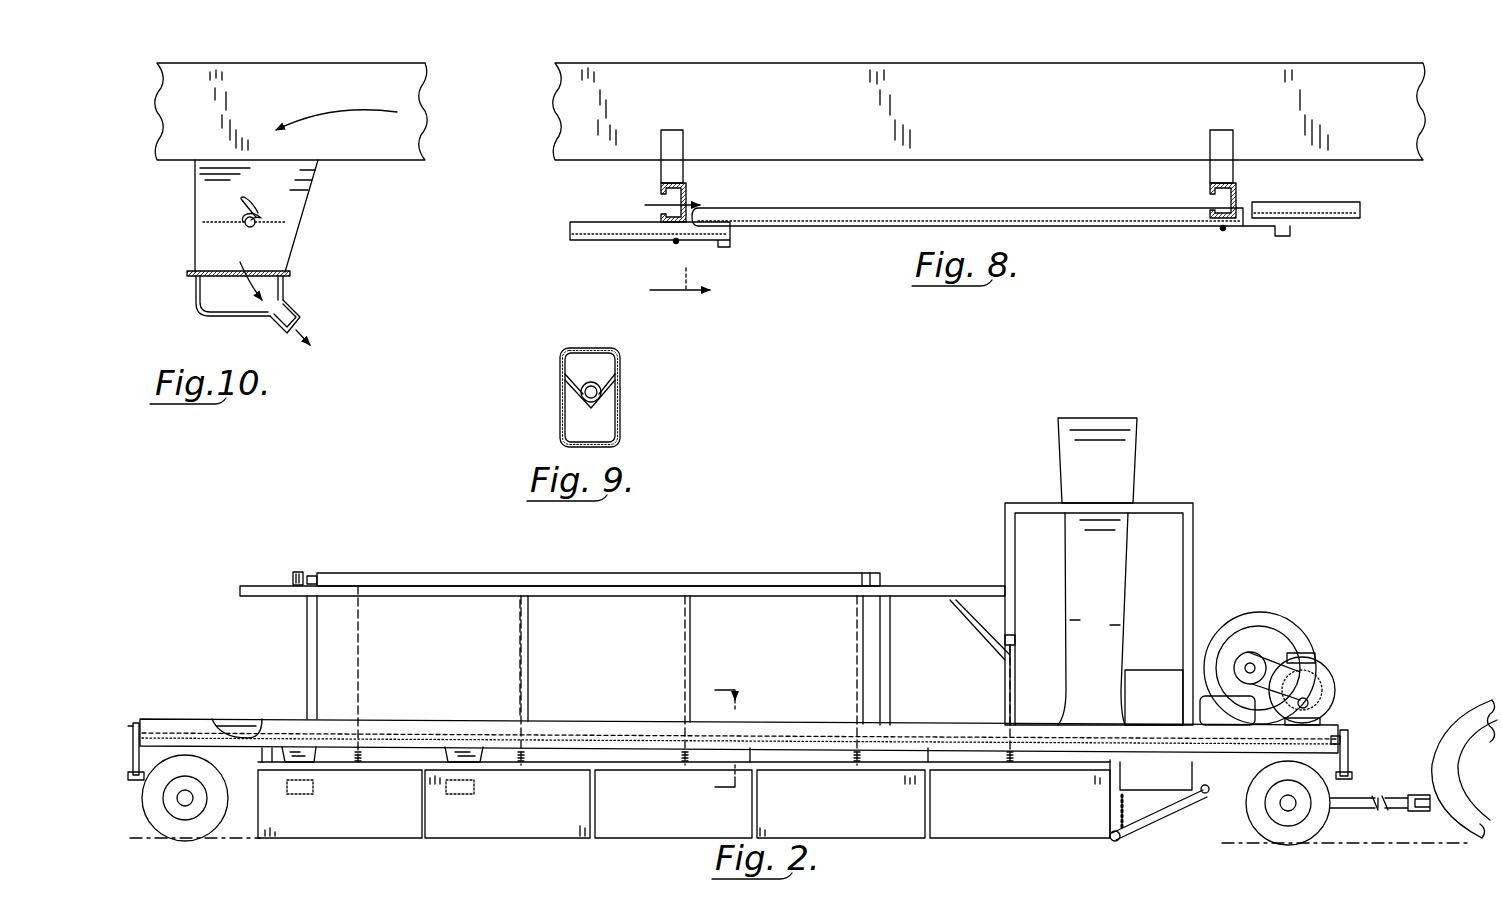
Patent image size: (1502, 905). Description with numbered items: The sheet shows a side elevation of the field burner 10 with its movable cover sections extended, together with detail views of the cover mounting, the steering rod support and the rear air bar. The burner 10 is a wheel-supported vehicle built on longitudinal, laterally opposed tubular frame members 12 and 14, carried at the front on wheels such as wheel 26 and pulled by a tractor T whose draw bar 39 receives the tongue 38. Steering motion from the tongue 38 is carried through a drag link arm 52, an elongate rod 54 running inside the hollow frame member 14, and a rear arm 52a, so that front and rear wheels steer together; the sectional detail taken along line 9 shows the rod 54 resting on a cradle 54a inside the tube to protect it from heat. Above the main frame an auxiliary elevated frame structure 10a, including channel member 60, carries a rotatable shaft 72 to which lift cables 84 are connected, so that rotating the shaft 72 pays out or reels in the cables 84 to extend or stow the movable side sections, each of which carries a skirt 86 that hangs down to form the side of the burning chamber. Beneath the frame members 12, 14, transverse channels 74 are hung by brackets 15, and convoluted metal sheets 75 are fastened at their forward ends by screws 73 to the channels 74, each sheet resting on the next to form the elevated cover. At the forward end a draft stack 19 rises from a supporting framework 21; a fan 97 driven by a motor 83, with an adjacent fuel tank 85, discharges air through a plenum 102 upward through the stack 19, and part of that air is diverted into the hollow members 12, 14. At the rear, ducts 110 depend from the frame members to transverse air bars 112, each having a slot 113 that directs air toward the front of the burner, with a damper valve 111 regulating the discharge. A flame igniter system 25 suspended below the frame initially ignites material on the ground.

In FIG. 2, the field burner 10 is at (1310, 522).
In FIG. 2, the auxiliary elevated frame structure 10a is at (916, 576).
In FIG. 8, the longitudinal frame member 12 is at (662, 247).
In FIG. 10, the longitudinal frame member 14 is at (375, 150).
In FIG. 8, the longitudinal frame member 14 is at (1000, 152).
In FIG. 9, the longitudinal frame member 14 is at (618, 406).
In FIG. 2, the longitudinal frame member 14 is at (400, 718).
In FIG. 8, the bracket 15 is at (672, 148).
In FIG. 2, the draft stack 19 is at (1140, 462).
In FIG. 2, the supporting framework 21 is at (1196, 570).
In FIG. 2, the flame igniter system 25 is at (1200, 814).
In FIG. 2, the front wheel 26 is at (1297, 835).
In FIG. 2, the tongue 38 is at (1336, 812).
In FIG. 2, the draw bar 39 is at (1365, 796).
In FIG. 2, the drag link arm 52 is at (1352, 750).
In FIG. 2, the drag link arm 52a is at (143, 748).
In FIG. 9, the elongate rod 54 is at (600, 384).
In FIG. 2, the elongate rod 54 is at (235, 735).
In FIG. 9, the cradle 54a is at (567, 394).
In FIG. 2, the elongate channel member 60 is at (270, 596).
In FIG. 2, the elongate shaft 72 is at (447, 582).
In FIG. 8, the screw 73 is at (677, 244).
In FIG. 8, the transversely extending channel 74 is at (688, 204).
In FIG. 8, the convoluted metal sheet 75 is at (592, 236).
In FIG. 2, the drive motor 83 is at (1332, 690).
In FIG. 2, the lift cable 84 is at (692, 648).
In FIG. 2, the fuel tank 85 is at (1205, 710).
In FIG. 2, the skirt 86 is at (897, 832).
In FIG. 2, the fan 97 is at (1252, 612).
In FIG. 2, the plenum 102 is at (1152, 672).
In FIG. 10, the duct 110 is at (292, 194).
In FIG. 2, the duct 110 is at (303, 752).
In FIG. 10, the damper valve 111 is at (272, 229).
In FIG. 10, the air bar 112 is at (283, 283).
In FIG. 2, the air bar 112 is at (313, 790).
In FIG. 10, the slot 113 is at (292, 318).
In FIG. 2, the section line 9 is at (715, 740).
In FIG. 2, the tractor T is at (1464, 751).